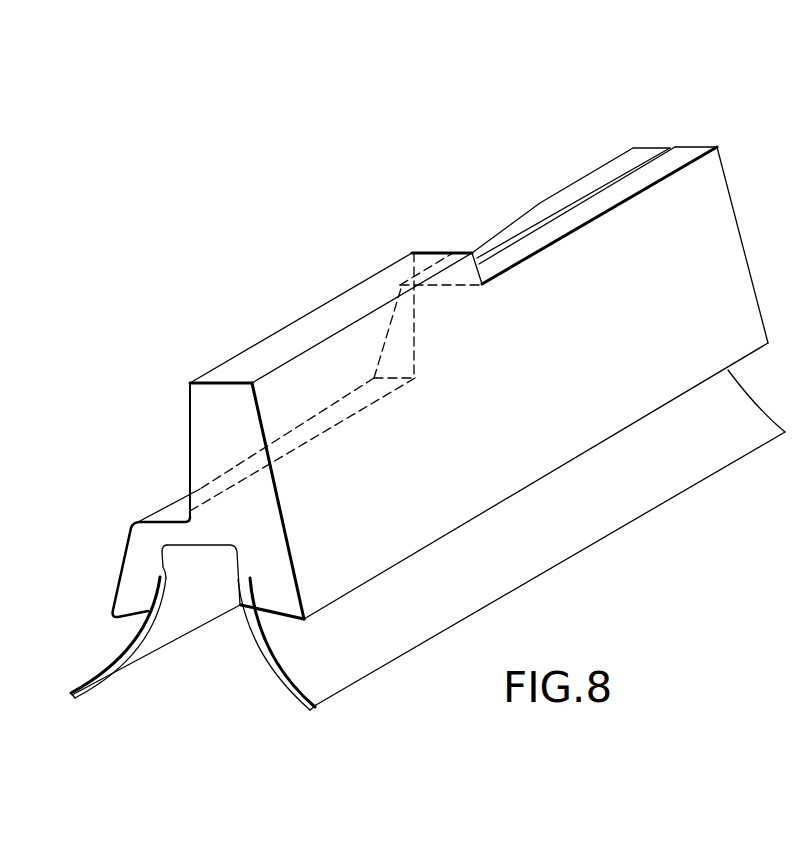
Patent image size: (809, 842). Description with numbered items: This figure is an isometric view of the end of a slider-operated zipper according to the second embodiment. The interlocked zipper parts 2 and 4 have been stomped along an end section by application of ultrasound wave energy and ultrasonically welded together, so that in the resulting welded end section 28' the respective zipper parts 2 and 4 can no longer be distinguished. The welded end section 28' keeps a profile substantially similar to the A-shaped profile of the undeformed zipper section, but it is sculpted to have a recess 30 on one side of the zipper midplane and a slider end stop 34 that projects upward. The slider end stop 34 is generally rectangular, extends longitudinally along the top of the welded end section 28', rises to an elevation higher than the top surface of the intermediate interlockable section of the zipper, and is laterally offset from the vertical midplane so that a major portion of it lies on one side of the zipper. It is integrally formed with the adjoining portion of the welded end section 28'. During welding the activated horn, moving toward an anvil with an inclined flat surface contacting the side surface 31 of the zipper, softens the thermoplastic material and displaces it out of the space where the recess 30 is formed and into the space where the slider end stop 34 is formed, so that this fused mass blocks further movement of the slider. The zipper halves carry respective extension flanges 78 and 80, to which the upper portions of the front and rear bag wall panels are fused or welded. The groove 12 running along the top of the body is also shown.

The groove 12 is at (594, 163).
The zipper part 2 is at (683, 155).
The zipper part 4 is at (537, 217).
The side surface 31 is at (713, 250).
The slider end stop 34 is at (295, 337).
The recess 30 is at (160, 423).
The welded end section 28' is at (129, 592).
The extension flange 80 is at (110, 655).
The extension flange 78 is at (290, 690).